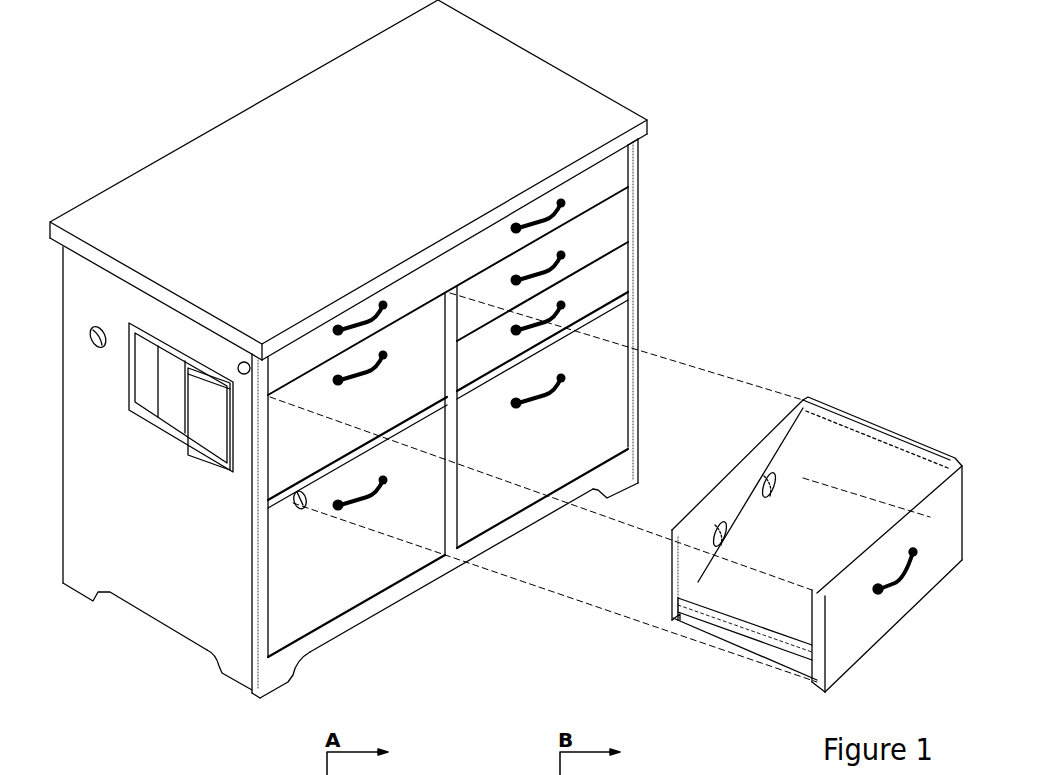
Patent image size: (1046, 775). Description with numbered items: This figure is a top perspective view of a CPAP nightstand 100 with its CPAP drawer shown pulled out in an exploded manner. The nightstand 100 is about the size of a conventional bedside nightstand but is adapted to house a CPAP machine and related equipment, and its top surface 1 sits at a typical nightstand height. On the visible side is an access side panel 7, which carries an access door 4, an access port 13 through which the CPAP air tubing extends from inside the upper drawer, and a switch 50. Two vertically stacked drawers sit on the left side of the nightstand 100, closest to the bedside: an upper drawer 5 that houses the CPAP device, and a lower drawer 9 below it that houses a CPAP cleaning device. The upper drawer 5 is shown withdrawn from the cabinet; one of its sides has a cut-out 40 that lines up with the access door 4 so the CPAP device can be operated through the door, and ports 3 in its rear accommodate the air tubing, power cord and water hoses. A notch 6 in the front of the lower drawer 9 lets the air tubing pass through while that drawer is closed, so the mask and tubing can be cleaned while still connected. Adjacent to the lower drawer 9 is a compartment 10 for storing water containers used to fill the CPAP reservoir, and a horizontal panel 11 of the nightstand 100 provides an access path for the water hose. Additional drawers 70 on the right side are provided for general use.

The top surface 1 is at (113, 195).
The nightstand 100 is at (203, 148).
The additional drawers 70 is at (622, 153).
The switch 50 is at (245, 362).
The access door 4 is at (167, 403).
The access port 13 is at (96, 328).
The upper drawer 5 is at (282, 457).
The notch 6 is at (300, 512).
The access side panel 7 is at (117, 568).
The lower drawer 9 is at (378, 572).
The compartment 10 is at (478, 510).
The ports 3 is at (770, 478).
The cut-out 40 is at (737, 613).
The horizontal panel 11 is at (778, 769).